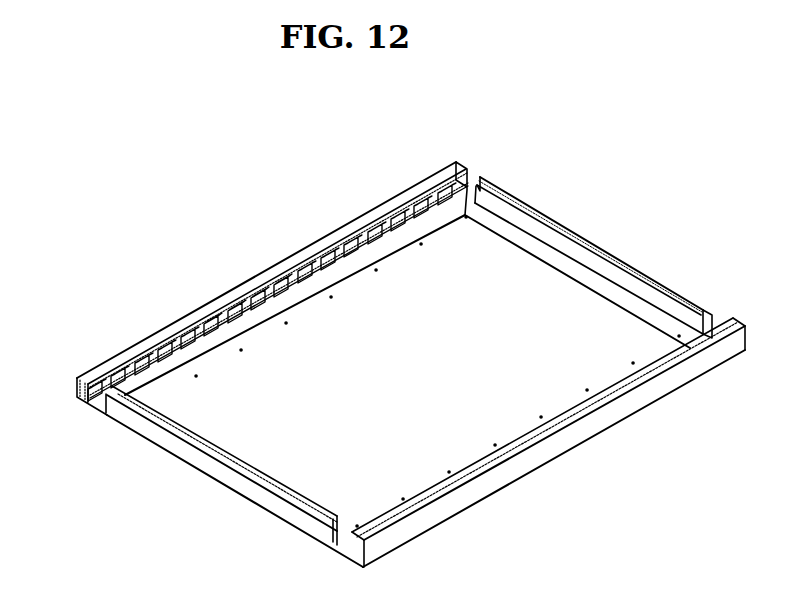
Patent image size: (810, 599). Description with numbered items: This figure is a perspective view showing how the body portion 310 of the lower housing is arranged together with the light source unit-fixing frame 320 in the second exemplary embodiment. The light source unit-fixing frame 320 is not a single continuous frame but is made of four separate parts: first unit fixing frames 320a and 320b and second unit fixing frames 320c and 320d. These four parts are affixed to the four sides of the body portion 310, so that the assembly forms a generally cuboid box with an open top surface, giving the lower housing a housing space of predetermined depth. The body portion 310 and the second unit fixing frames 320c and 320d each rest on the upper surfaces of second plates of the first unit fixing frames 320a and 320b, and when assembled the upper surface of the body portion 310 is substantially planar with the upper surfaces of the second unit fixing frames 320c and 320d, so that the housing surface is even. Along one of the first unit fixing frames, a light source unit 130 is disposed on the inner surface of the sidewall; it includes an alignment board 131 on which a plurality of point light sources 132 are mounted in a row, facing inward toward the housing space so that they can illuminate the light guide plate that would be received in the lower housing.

The light source unit-fixing frame 320 is at (470, 156).
The first unit fixing frame 320a is at (430, 517).
The first unit fixing frame 320b is at (216, 292).
The second unit fixing frame 320c is at (206, 463).
The second unit fixing frame 320d is at (607, 258).
The body portion 310 is at (530, 273).
The light source unit 130 is at (88, 306).
The alignment board 131 is at (82, 370).
The point light source 132 is at (110, 363).